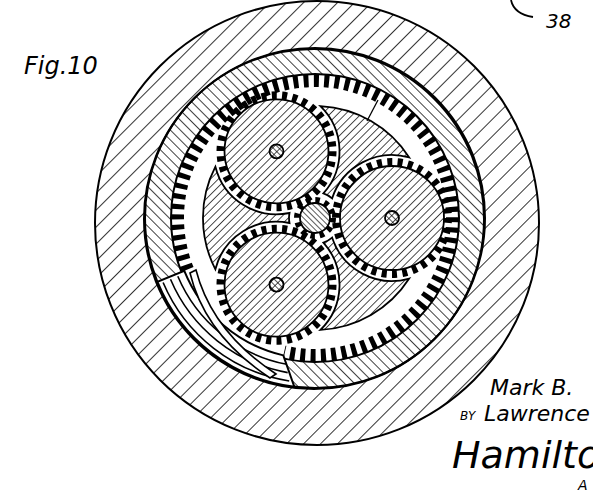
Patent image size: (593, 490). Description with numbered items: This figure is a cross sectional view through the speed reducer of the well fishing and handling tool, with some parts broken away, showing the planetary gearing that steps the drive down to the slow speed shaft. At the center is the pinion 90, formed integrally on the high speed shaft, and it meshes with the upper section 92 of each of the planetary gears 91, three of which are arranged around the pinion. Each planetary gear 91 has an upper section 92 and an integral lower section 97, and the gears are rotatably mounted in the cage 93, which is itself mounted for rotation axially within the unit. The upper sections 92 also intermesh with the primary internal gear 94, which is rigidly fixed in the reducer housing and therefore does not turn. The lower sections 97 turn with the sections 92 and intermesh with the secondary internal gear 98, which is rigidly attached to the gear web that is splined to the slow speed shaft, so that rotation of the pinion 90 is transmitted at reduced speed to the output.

The pinion 90 is at (296, 218).
The planetary gears 91 is at (318, 97).
The upper section 92 is at (247, 128).
The cage 93 is at (420, 90).
The primary internal gear 94 is at (483, 118).
The lower section 97 is at (227, 320).
The secondary internal gear 98 is at (180, 393).